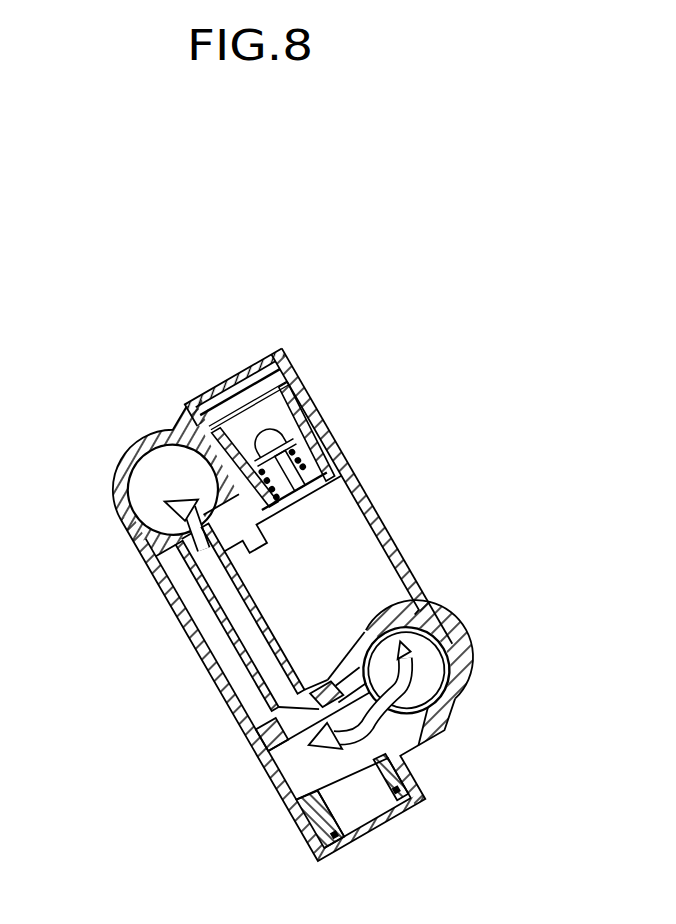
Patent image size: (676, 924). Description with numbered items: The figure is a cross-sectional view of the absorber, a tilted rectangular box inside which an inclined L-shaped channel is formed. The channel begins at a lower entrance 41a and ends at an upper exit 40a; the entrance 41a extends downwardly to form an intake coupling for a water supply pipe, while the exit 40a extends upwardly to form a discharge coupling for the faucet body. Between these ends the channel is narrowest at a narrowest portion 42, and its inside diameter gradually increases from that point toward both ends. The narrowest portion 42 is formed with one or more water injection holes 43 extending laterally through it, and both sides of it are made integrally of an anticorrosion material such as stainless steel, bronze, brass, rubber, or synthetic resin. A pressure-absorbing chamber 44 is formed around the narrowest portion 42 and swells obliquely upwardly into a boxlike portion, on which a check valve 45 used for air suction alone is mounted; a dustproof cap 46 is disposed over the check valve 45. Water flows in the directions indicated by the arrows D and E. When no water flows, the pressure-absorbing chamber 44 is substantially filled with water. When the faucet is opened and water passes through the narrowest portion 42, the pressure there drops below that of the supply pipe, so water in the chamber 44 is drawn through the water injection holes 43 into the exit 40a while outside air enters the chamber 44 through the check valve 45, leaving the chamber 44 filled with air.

The upper exit 40a is at (133, 487).
The lower entrance 41a is at (425, 680).
The narrowest portion 42 is at (293, 697).
The water injection holes 43 is at (300, 668).
The pressure-absorbing chamber 44 is at (385, 577).
The check valve 45 is at (330, 438).
The dustproof cap 46 is at (267, 348).
The arrow D is at (432, 728).
The arrow E is at (130, 538).